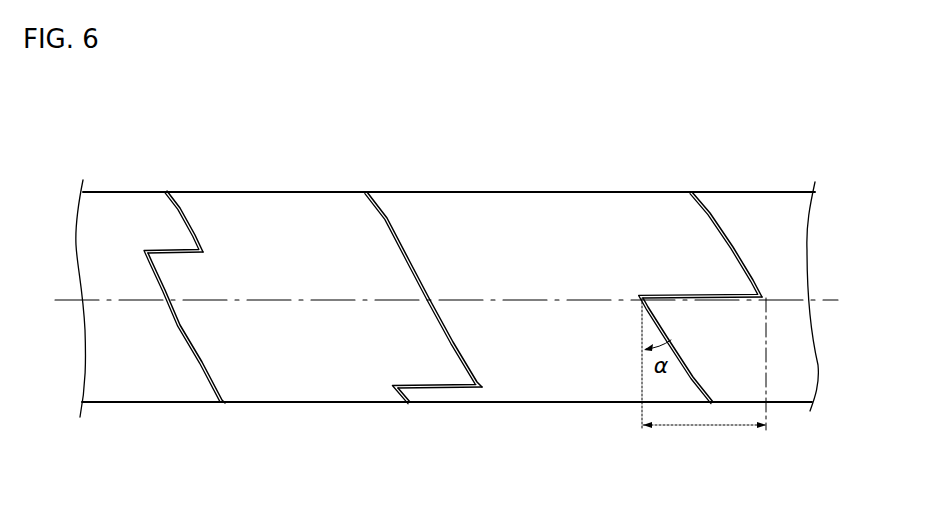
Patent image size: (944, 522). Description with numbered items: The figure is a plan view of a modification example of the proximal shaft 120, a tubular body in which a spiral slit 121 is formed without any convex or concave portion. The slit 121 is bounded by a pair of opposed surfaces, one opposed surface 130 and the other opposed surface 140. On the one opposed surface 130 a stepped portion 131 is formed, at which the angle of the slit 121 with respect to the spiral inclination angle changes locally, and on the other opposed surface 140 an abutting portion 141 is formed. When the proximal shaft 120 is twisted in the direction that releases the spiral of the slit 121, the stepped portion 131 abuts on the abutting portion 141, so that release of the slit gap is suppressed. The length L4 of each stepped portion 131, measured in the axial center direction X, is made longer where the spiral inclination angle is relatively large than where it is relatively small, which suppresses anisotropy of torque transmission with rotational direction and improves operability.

The proximal shaft 120 is at (126, 191).
The slit 121 is at (410, 236).
The one opposed surface 130 is at (418, 265).
The stepped portion 131 is at (165, 243).
The other opposed surface 140 is at (424, 263).
The abutting portion 141 is at (185, 258).
The axial center direction X is at (822, 298).
The length of stepped portion L4 is at (704, 381).